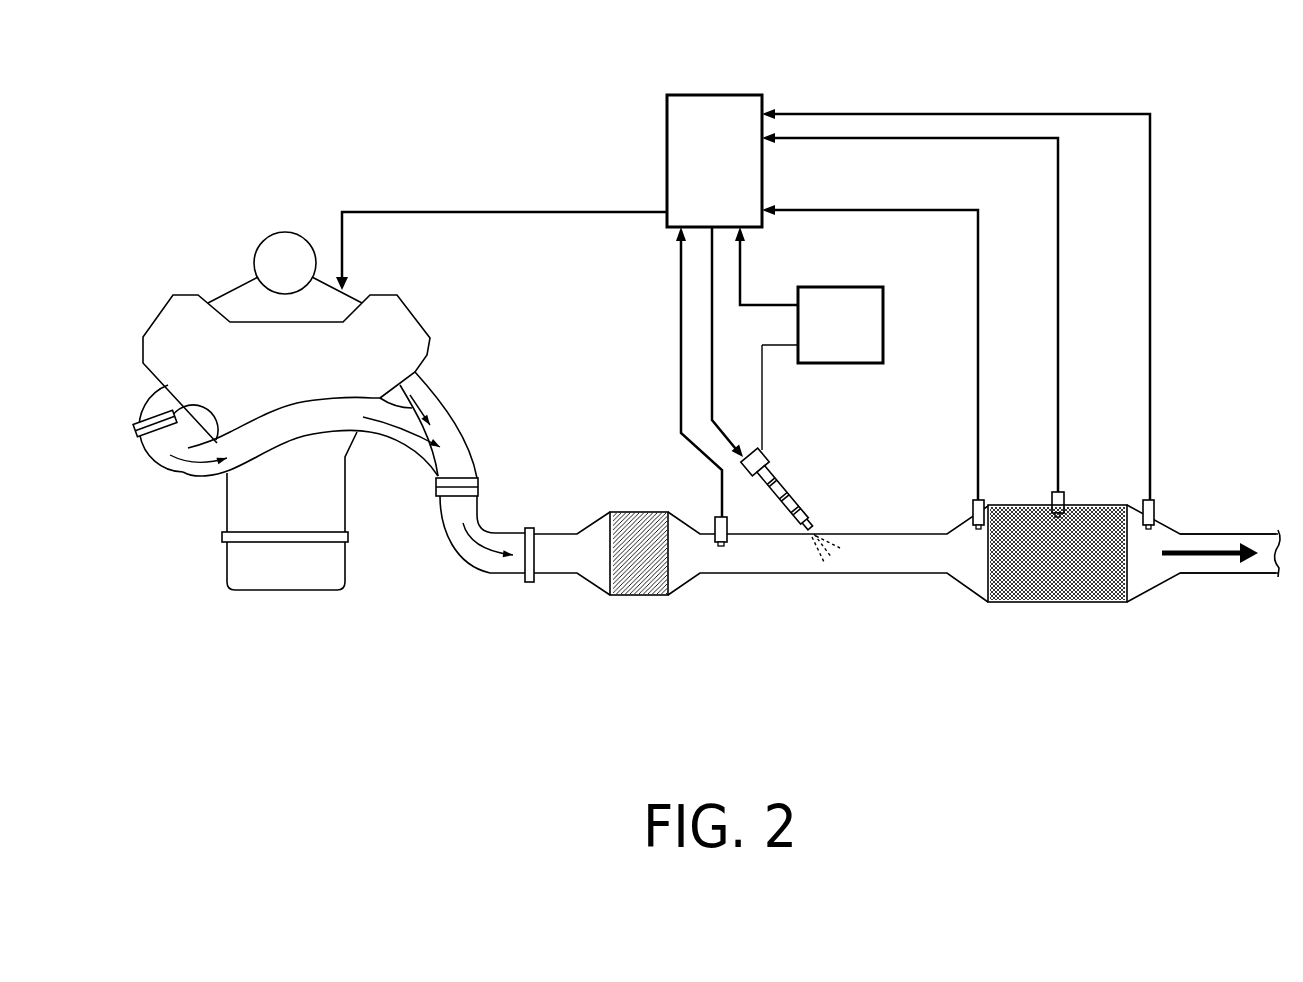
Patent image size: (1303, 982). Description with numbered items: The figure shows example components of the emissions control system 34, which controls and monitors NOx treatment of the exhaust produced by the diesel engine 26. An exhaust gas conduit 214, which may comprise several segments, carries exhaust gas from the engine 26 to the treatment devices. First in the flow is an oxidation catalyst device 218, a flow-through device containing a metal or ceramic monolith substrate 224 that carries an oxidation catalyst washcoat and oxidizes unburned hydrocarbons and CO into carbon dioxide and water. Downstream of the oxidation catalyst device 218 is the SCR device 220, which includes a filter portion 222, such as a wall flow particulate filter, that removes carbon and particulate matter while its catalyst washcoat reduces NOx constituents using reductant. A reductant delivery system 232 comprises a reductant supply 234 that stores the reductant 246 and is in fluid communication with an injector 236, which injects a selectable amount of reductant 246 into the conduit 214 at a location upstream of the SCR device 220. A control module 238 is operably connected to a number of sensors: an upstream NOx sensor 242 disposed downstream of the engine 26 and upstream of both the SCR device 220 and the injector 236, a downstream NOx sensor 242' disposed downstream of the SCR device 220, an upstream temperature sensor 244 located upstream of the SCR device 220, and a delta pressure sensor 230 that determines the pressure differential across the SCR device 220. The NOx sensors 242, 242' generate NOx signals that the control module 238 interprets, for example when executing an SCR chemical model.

The diesel engine 26 is at (237, 267).
The exhaust gas conduit 214 is at (440, 402).
The oxidation catalyst device 218 is at (627, 598).
The SCR device 220 is at (1085, 605).
The filter portion 222 is at (1050, 572).
The monolith substrate 224 is at (635, 532).
The pressure sensor 230 is at (1065, 498).
The reductant delivery system 232 is at (1040, 107).
The reductant supply 234 is at (885, 318).
The injector 236 is at (817, 513).
The control module 238 is at (665, 163).
The upstream NOx sensor 242 is at (682, 386).
The downstream NOx sensor 242' is at (1203, 481).
The upstream temperature sensor 244 is at (972, 512).
The reductant 246 is at (820, 543).
The emissions control system 34 is at (757, 603).